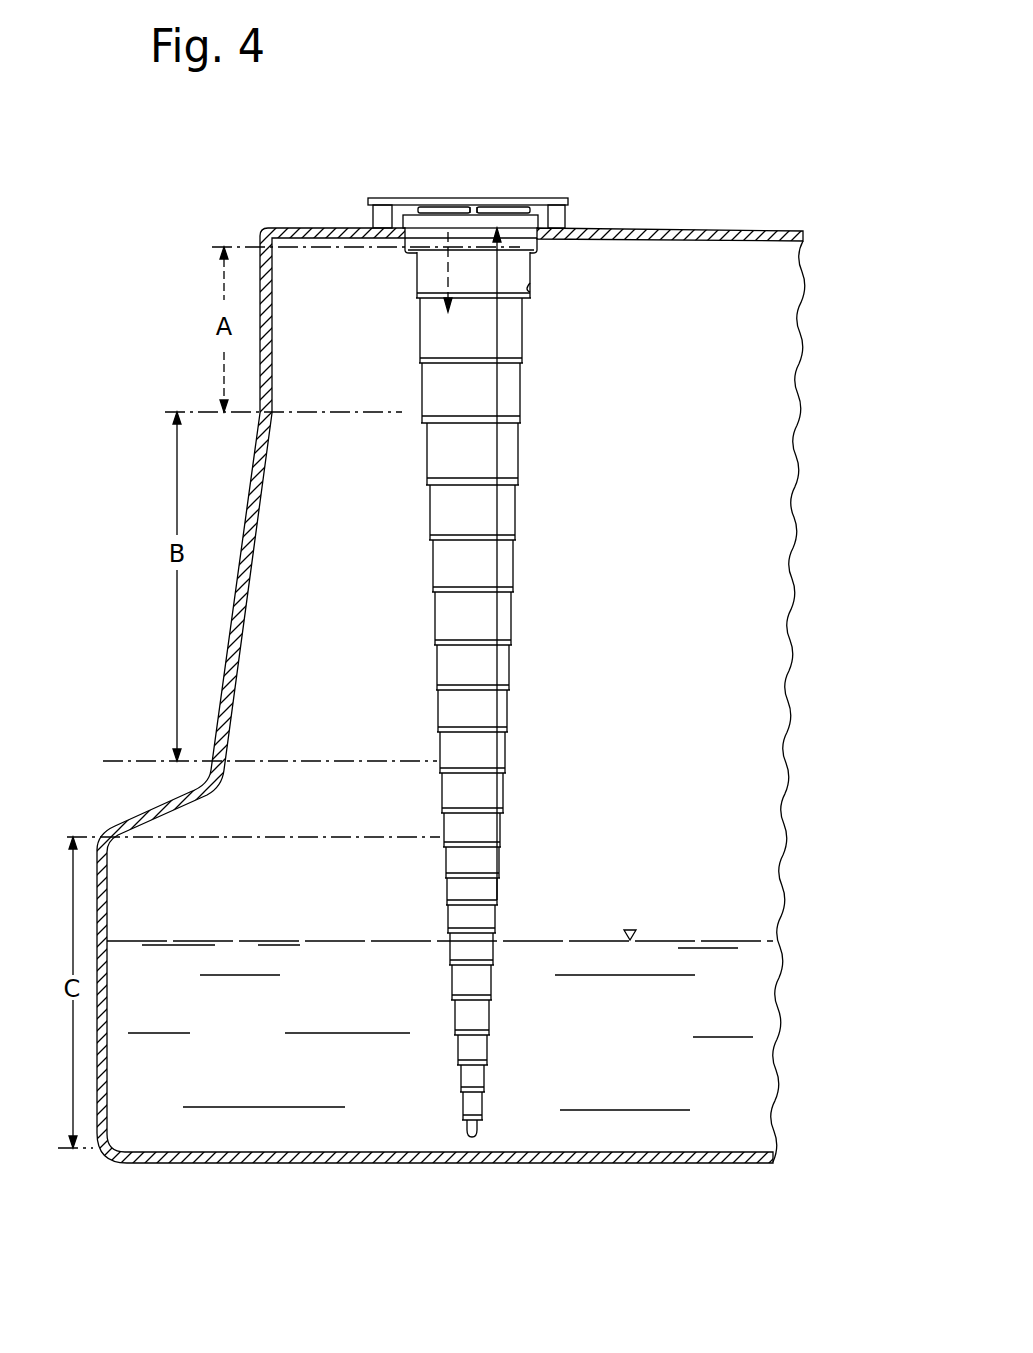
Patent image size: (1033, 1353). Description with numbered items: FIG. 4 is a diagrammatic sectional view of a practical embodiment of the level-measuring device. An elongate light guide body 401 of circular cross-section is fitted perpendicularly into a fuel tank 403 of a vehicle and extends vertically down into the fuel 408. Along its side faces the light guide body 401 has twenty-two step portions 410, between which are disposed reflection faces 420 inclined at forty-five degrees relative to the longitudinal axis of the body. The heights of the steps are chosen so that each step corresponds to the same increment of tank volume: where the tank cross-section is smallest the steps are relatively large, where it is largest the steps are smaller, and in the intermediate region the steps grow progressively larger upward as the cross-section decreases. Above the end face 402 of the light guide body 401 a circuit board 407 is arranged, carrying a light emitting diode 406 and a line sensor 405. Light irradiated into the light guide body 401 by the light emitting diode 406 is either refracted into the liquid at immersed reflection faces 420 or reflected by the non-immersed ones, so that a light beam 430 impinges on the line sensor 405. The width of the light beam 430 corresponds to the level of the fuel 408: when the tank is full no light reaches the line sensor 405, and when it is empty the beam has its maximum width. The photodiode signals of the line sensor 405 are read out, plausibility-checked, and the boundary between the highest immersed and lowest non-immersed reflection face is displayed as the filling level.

The light guide body 401 is at (472, 682).
The end face 402 is at (407, 198).
The fuel tank 403 is at (735, 230).
The line sensor 405 is at (518, 200).
The light emitting diode 406 is at (442, 203).
The circuit board 407 is at (480, 203).
The fuel 408 is at (706, 941).
The step portions 410 is at (430, 563).
The reflection faces 420 is at (517, 537).
The light beam 430 is at (522, 284).